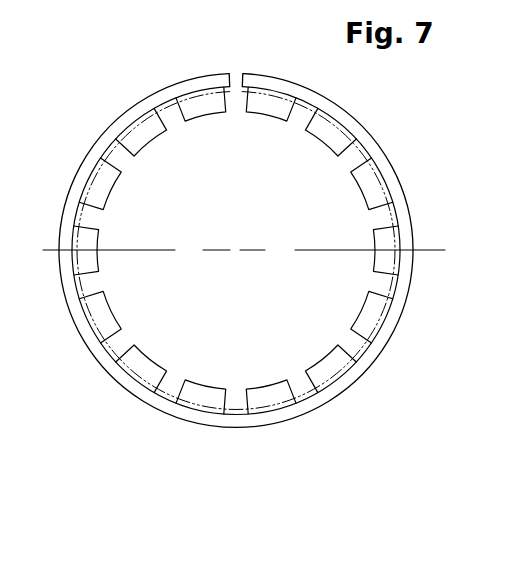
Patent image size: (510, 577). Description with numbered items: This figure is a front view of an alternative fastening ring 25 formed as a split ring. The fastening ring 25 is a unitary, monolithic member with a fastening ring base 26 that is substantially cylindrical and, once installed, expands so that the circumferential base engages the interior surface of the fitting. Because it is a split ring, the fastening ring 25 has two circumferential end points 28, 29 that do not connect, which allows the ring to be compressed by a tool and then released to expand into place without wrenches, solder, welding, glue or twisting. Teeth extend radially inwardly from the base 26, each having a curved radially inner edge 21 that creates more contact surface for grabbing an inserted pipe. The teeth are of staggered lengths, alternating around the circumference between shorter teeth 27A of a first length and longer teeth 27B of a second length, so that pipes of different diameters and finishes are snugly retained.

The fastening ring 25 is at (99, 96).
The fastening ring base 26 is at (127, 382).
The circumferential end point 28 is at (231, 75).
The circumferential end point 29 is at (244, 77).
The radially inner edge 21 is at (313, 353).
The fastening ring teeth 27A is at (105, 313).
The fastening ring teeth 27B is at (145, 350).